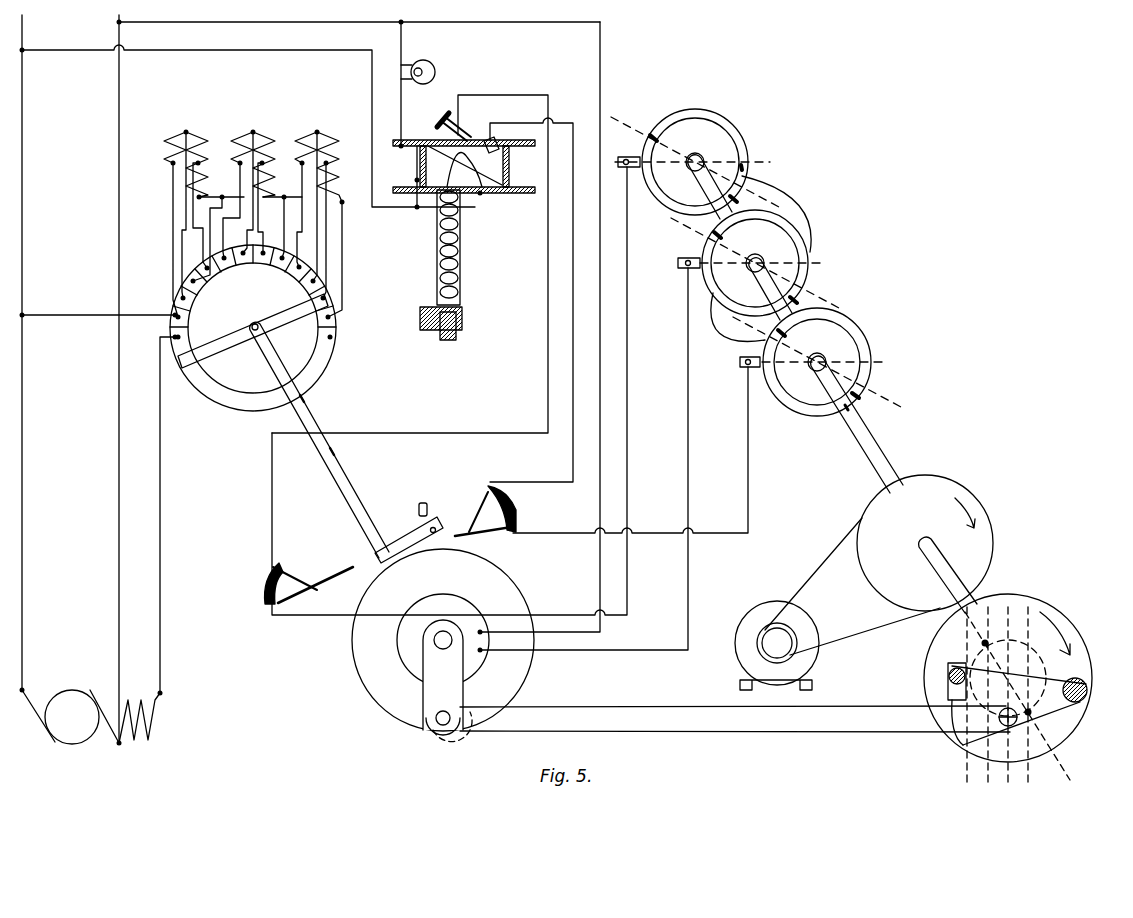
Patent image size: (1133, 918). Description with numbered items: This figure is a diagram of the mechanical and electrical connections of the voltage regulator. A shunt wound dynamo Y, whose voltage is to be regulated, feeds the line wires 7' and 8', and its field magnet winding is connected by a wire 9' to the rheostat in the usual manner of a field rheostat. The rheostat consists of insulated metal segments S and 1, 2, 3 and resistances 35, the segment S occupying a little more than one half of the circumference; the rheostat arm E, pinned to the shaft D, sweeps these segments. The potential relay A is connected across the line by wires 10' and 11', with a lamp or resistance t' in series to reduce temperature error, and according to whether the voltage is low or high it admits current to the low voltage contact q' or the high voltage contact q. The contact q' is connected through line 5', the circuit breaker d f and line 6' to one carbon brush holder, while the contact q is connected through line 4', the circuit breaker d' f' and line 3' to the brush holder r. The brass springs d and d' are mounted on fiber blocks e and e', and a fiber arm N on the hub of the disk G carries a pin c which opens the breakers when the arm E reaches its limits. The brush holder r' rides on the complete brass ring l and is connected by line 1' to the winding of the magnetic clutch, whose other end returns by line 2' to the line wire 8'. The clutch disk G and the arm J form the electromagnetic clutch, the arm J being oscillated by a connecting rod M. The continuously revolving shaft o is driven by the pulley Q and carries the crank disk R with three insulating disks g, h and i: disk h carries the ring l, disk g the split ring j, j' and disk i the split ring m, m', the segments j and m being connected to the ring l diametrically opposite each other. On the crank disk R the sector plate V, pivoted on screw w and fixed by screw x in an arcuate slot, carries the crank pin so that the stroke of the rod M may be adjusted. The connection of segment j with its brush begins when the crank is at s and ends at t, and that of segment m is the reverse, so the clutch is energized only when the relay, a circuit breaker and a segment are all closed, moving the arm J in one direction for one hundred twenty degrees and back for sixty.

The line 1' is at (599, 474).
The line 2' is at (554, 331).
The line 3' is at (630, 450).
The line 4' is at (531, 300).
The line 5' is at (410, 264).
The line 6' is at (465, 407).
The line wire 7' is at (99, 354).
The line wire 8' is at (104, 380).
The conductor 9' is at (174, 515).
The wire 10' is at (248, 127).
The wire 11' is at (359, 35).
The rheostat segment 1 is at (346, 294).
The rheostat segment 2 is at (344, 272).
The rheostat segment 3 is at (288, 284).
The resistance coils 35 is at (190, 317).
The shunt wound dynamo Y is at (91, 737).
The rheostat segment S is at (336, 352).
The rheostat arm E is at (230, 346).
The shaft D is at (350, 462).
The fiber arm N is at (400, 533).
The pin c is at (423, 503).
The flat brass spring d is at (315, 590).
The flat brass spring d' is at (483, 543).
The fiber block e is at (261, 583).
The fiber block e' is at (515, 509).
The circuit breaker contact f is at (295, 570).
The circuit breaker contact f' is at (473, 510).
The disk G is at (518, 580).
The arm J is at (423, 688).
The electromagnet frame A is at (520, 196).
The high voltage contact q is at (489, 155).
The low voltage contact q' is at (456, 120).
The resistance device t' is at (433, 68).
The insulating disk i is at (695, 164).
The insulating disk h is at (755, 265).
The brass segment j is at (817, 370).
The brass segment m is at (776, 189).
The brass segment m' is at (646, 214).
The brass ring l is at (810, 270).
The insulating disk g is at (858, 345).
The brass segment j' is at (863, 318).
The carbon brush holder r is at (736, 367).
The carbon brush holder r' is at (674, 269).
The shaft o is at (872, 440).
The pulley Q is at (980, 488).
The crank disk R is at (1078, 636).
The connecting rod M is at (877, 706).
The sector shaped plate V is at (1076, 700).
The screw w is at (1088, 690).
The screw x is at (948, 672).
The crank position s is at (1028, 708).
The crank position t is at (989, 631).